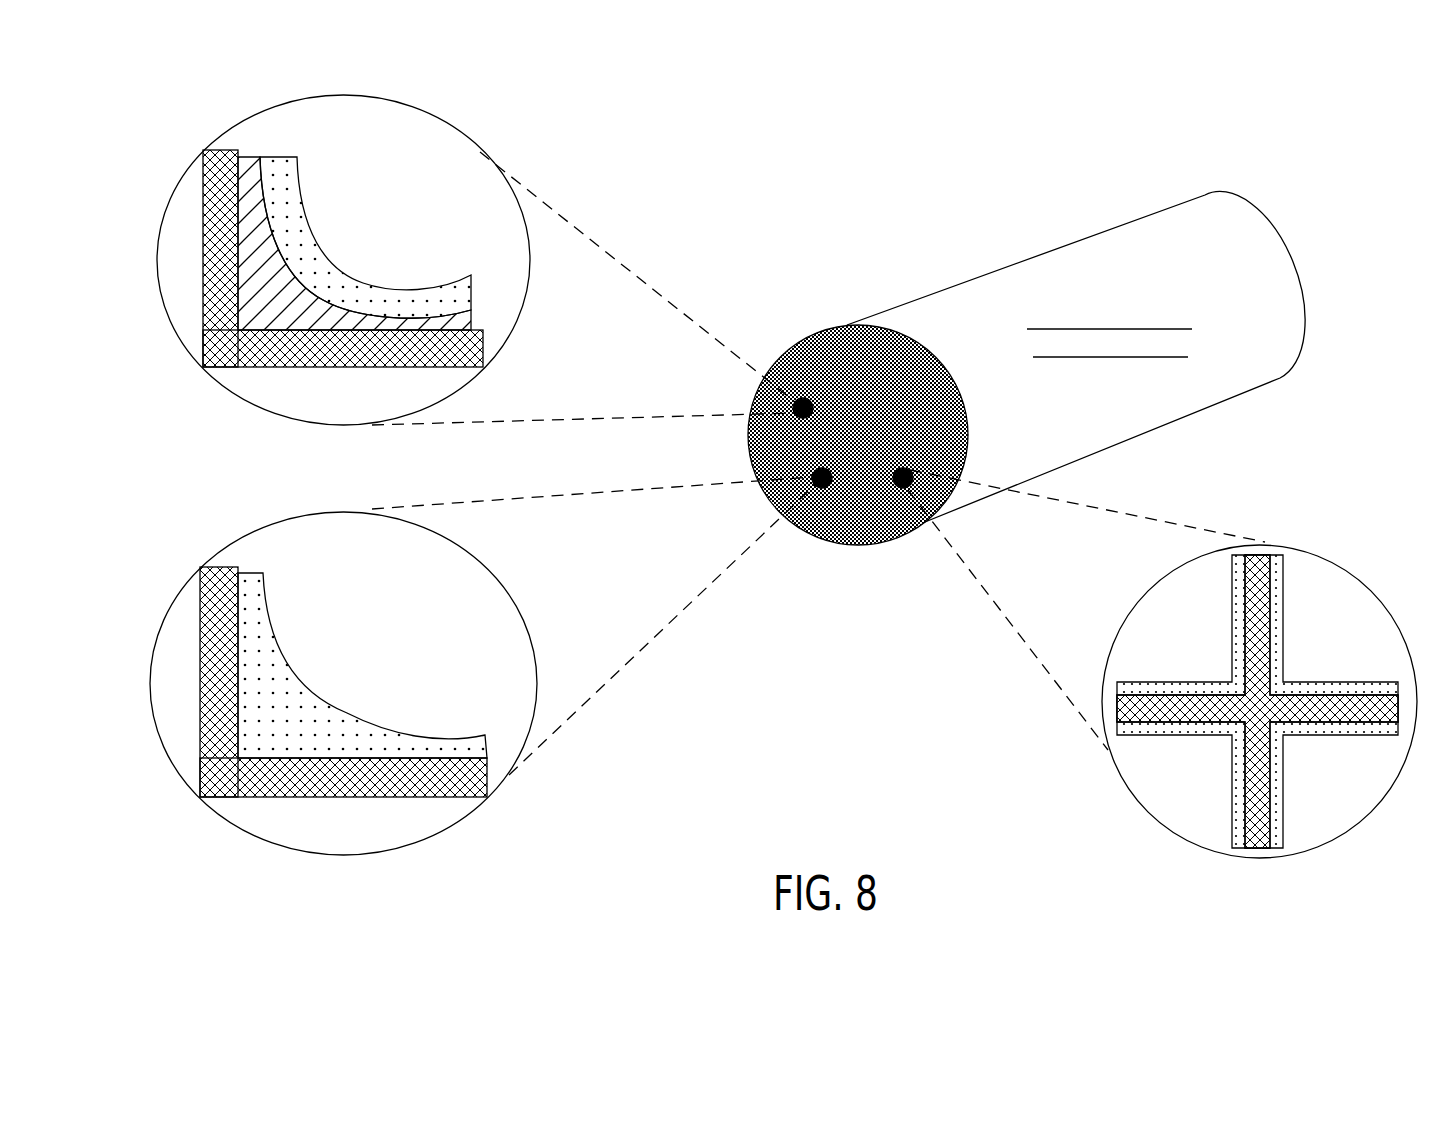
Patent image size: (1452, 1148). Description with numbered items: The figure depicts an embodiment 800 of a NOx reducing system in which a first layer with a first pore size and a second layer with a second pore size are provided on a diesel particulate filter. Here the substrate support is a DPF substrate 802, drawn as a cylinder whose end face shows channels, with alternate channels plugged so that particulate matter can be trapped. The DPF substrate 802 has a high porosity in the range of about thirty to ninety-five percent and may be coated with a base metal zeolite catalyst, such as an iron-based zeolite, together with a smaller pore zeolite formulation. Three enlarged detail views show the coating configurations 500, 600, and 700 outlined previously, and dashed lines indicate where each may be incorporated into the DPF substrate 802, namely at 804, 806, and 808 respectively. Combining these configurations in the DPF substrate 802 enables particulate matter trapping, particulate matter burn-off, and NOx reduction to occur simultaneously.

The configuration 500 is at (361, 207).
The configuration 600 is at (349, 614).
The configuration 700 is at (1308, 647).
The embodiment of NOx reducing system 800 is at (1345, 135).
The DPF substrate 802 is at (997, 270).
The location on DPF substrate 804 is at (708, 322).
The location on DPF substrate 806 is at (652, 645).
The location on DPF substrate 808 is at (1175, 523).